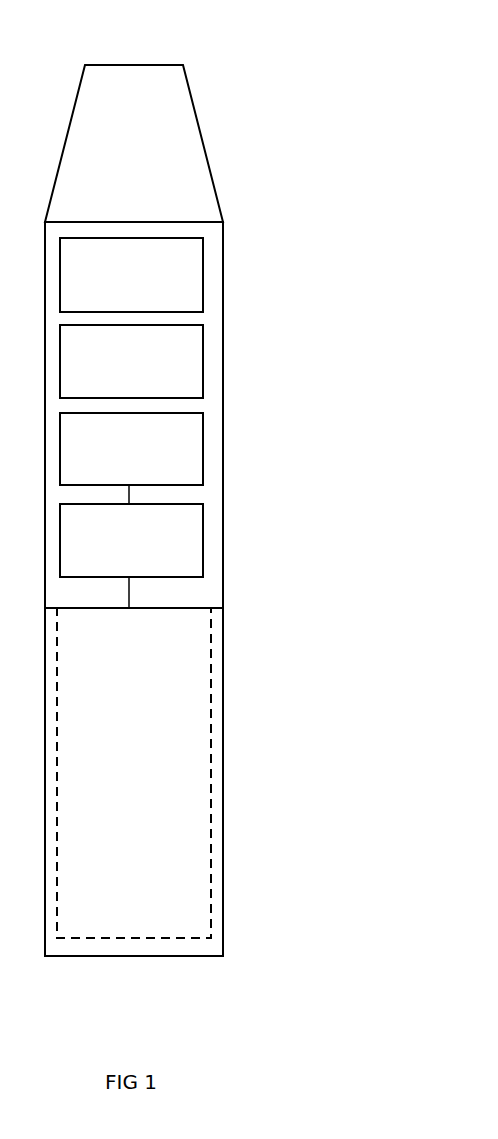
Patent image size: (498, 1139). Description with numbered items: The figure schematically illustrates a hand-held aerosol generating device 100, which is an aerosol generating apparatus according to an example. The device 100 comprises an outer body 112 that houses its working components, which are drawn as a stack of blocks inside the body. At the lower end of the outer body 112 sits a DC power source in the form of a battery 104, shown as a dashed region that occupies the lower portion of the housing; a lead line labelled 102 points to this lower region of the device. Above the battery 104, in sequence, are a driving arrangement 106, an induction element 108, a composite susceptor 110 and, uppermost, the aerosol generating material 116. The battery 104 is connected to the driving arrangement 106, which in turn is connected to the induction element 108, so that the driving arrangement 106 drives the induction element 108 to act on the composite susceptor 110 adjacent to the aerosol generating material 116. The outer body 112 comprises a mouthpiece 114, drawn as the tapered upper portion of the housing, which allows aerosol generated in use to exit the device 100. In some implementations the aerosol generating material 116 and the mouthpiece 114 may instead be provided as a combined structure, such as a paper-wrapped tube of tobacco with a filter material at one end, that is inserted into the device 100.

The aerosol generating device 100 is at (275, 63).
The power supply section 102 is at (223, 847).
The battery 104 is at (146, 775).
The driving arrangement 106 is at (146, 549).
The induction element 108 is at (146, 465).
The composite susceptor 110 is at (146, 375).
The outer body 112 is at (223, 542).
The mouthpiece 114 is at (202, 137).
The aerosol generating material 116 is at (146, 292).